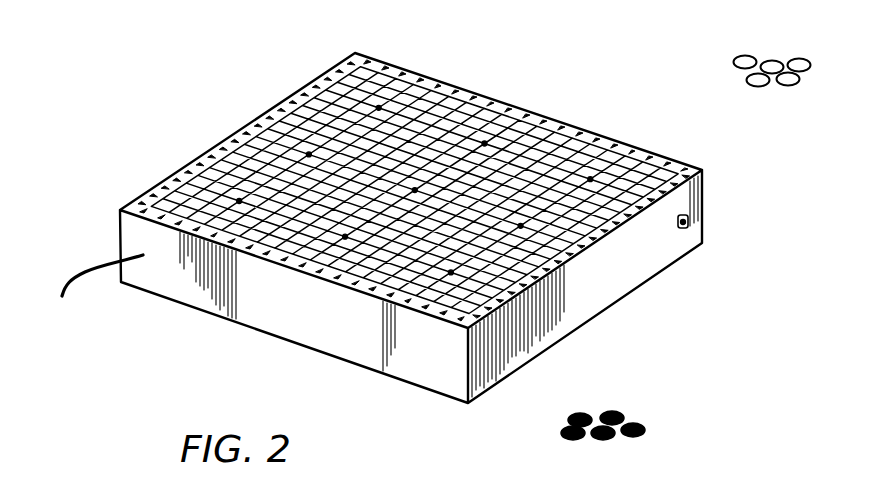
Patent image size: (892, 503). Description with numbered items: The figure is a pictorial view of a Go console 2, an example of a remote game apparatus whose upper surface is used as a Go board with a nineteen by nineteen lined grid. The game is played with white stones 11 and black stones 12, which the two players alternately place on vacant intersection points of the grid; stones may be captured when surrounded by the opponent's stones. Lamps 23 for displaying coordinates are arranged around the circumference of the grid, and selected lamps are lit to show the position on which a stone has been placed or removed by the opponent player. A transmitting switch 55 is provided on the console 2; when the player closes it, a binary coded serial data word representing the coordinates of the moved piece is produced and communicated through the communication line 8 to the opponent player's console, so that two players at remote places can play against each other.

The Go console 2 is at (460, 96).
The communication line 8 is at (73, 273).
The white stones 11 is at (772, 60).
The black stones 12 is at (625, 412).
The lamps 23 is at (402, 63).
The transmitting switch 55 is at (690, 216).